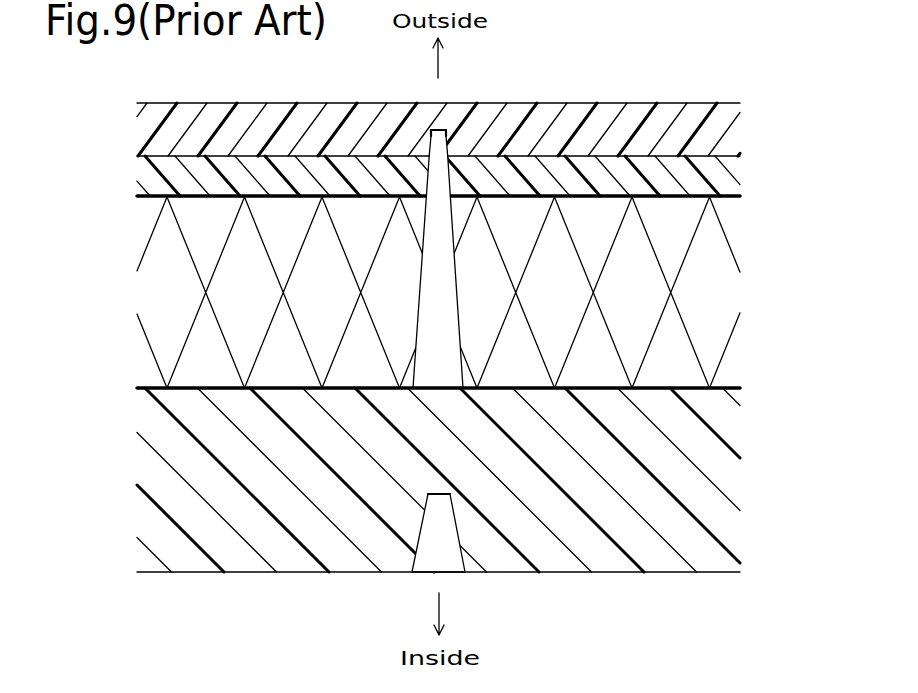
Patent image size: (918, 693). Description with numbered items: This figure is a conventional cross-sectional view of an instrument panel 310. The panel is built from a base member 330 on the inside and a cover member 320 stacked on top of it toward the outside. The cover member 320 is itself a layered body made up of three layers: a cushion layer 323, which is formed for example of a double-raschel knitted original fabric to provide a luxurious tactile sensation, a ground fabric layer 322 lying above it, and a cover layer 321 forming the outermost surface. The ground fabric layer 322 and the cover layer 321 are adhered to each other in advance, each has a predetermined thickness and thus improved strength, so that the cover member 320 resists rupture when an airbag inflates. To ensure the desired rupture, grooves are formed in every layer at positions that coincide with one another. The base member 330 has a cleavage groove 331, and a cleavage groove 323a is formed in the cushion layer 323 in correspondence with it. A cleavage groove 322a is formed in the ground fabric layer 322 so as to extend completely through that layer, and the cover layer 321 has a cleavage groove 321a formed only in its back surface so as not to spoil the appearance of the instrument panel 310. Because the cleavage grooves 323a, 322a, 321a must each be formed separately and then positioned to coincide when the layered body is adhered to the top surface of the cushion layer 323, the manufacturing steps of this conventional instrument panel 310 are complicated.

The instrument panel 310 is at (662, 78).
The cover member 320 is at (128, 103).
The cover layer 321 is at (729, 137).
The ground fabric layer 322 is at (731, 185).
The cushion layer 323 is at (729, 295).
The cleavage groove 321a is at (444, 140).
The cleavage groove 322a is at (450, 183).
The cleavage groove 323a is at (463, 362).
The base member 330 is at (128, 390).
The cleavage groove 331 is at (418, 548).